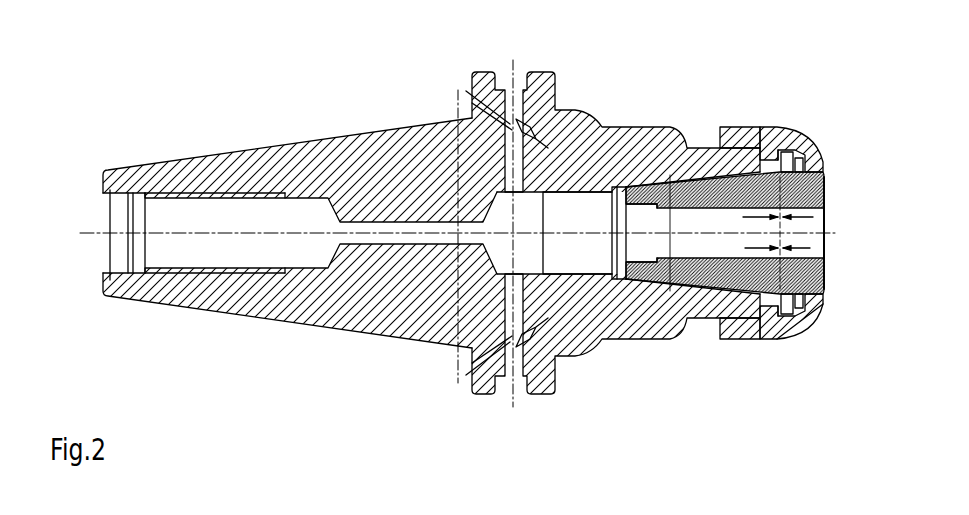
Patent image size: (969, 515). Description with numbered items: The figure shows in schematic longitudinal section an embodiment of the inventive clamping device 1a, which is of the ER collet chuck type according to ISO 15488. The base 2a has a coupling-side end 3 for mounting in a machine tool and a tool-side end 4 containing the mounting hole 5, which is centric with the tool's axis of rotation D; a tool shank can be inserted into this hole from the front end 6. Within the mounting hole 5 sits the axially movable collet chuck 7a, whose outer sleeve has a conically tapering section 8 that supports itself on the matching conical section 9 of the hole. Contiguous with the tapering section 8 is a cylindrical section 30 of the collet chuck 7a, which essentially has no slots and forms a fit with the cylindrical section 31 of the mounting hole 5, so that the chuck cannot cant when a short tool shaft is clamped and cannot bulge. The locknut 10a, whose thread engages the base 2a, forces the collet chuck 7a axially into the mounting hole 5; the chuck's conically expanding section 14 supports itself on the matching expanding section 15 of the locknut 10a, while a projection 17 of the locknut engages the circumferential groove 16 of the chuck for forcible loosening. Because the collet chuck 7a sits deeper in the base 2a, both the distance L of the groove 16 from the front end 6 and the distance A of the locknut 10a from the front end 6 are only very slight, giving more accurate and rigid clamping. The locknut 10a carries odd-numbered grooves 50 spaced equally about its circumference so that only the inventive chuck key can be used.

The clamping device 1a is at (244, 77).
The base 2a is at (337, 290).
The coupling-side end 3 is at (170, 306).
The axis of rotation D is at (200, 233).
The tool-side end 4 is at (612, 340).
The mounting hole 5 is at (565, 253).
The cylindrical section of the mounting hole 31 is at (621, 186).
The cylindrical section of the collet chuck 30 is at (641, 186).
The conical section of the mounting hole 9 is at (662, 186).
The conically tapering section 8 is at (686, 172).
The locknut 10a is at (757, 147).
The collet chuck 7a is at (687, 290).
The front end 6 is at (757, 318).
The grooves 50 is at (807, 327).
The circumferential groove 16 is at (790, 300).
The conically expanding section 14 is at (806, 150).
The conically expanding section of the locknut 15 is at (823, 163).
The projection 17 is at (790, 162).
The distance A is at (798, 216).
The distance L is at (770, 248).